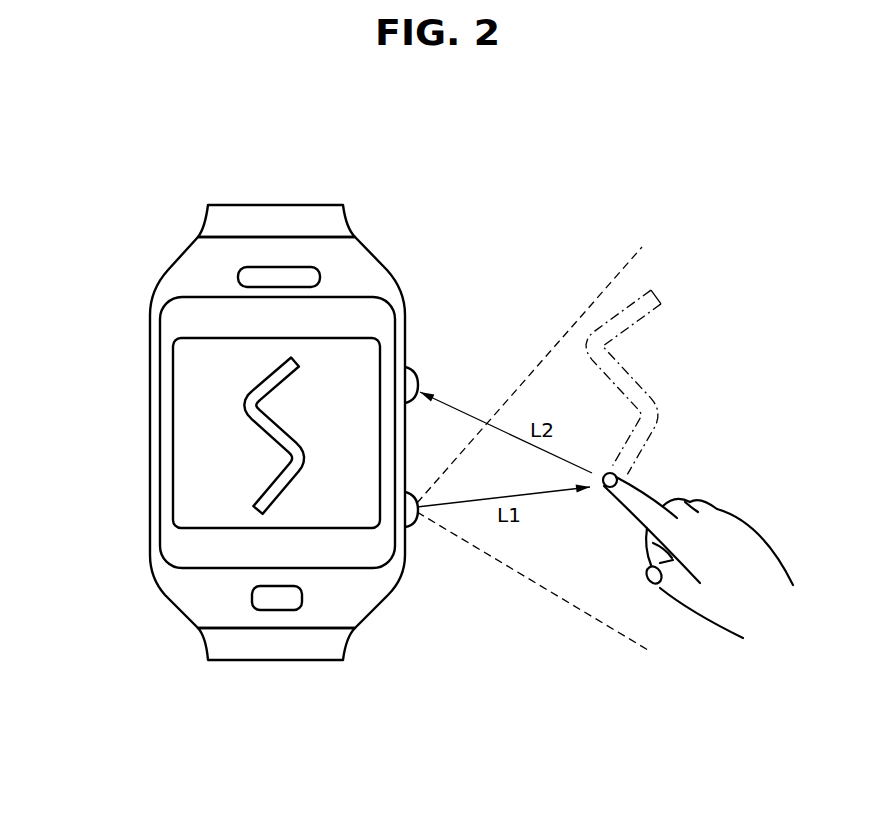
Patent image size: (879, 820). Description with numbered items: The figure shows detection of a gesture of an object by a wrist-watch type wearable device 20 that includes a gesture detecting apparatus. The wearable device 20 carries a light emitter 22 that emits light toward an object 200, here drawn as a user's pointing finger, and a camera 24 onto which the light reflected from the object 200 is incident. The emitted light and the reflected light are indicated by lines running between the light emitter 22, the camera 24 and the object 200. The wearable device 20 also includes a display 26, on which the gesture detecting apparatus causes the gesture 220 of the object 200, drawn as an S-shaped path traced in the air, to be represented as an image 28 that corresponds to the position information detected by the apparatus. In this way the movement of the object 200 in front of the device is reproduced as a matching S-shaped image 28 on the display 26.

The wearable device 20 is at (148, 482).
The light emitter 22 is at (413, 522).
The camera 24 is at (413, 383).
The display 26 is at (200, 425).
The image 28 is at (232, 399).
The object 200 is at (617, 470).
The gesture 220 is at (656, 392).